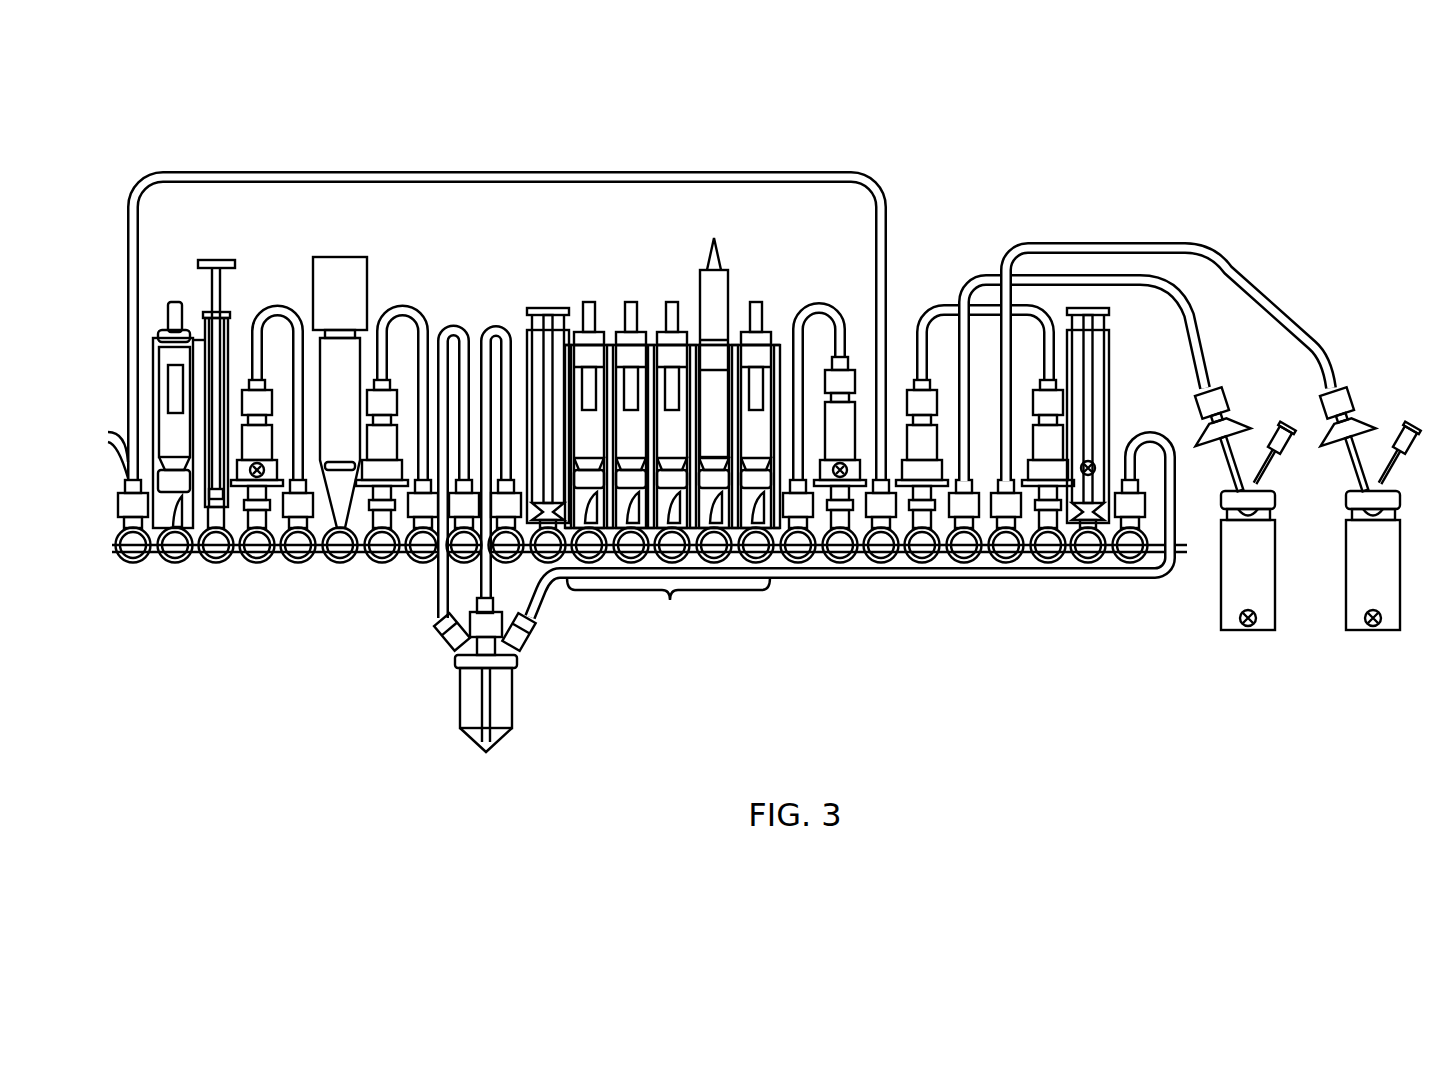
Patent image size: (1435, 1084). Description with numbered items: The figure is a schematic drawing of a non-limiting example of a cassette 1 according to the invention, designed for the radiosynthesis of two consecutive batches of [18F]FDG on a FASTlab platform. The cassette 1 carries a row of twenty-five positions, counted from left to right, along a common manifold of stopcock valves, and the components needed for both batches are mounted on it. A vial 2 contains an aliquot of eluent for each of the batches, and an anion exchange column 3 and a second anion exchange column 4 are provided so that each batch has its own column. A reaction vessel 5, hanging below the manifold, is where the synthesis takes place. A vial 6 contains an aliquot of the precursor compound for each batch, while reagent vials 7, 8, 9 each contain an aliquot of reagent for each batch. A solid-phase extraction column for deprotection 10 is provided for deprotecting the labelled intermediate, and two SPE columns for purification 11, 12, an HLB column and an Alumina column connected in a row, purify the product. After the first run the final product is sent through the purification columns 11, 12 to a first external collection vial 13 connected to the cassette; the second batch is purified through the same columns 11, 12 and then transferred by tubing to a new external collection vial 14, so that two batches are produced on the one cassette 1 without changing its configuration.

The cassette 1 is at (1283, 257).
The vial containing eluent 2 is at (178, 575).
The anion exchange column 3 is at (248, 578).
The anion exchange column 4 is at (365, 578).
The reaction vessel 5 is at (488, 722).
The vial containing precursor compound 6 is at (588, 353).
The reagent vial 7 is at (630, 353).
The reagent vial 8 is at (675, 353).
The reagent vial 9 is at (758, 353).
The solid-phase extraction column for deprotection 10 is at (780, 578).
The SPE column for purification 11 is at (905, 578).
The SPE column for purification 12 is at (1032, 471).
The first external collection vial 13 is at (1244, 628).
The new external collection vial 14 is at (1369, 628).